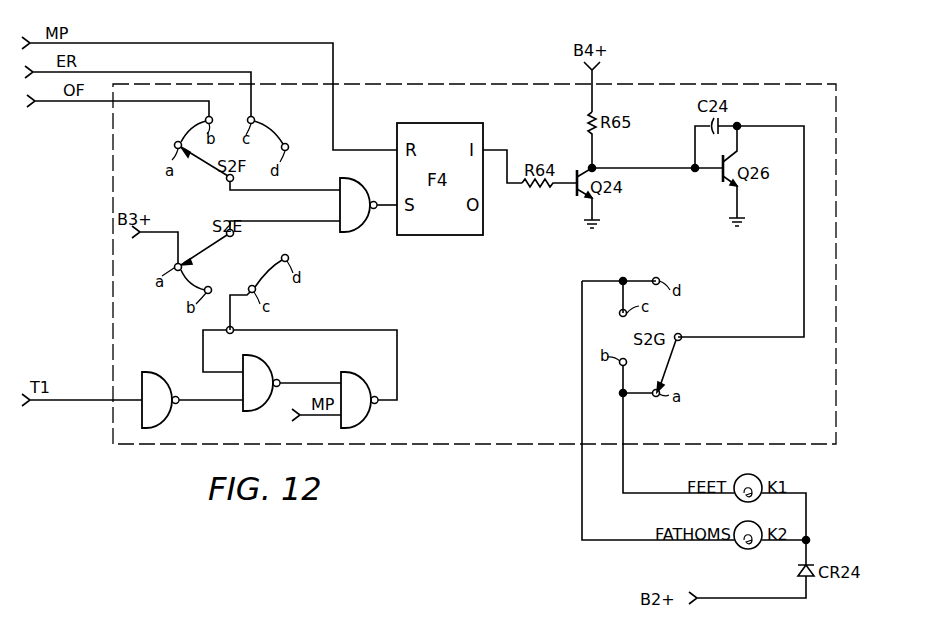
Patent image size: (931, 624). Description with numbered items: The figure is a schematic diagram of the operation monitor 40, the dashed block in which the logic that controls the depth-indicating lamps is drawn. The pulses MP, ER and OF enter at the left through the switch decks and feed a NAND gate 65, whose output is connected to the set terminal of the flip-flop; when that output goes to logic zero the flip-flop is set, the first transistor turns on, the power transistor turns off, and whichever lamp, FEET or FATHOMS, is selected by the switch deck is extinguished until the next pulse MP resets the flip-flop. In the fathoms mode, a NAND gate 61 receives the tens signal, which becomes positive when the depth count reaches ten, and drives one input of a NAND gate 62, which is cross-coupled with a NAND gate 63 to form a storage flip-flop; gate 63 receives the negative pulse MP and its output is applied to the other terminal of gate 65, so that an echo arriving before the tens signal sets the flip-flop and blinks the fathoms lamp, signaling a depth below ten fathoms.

The operation monitor 40 is at (492, 333).
The NAND gate 61 is at (162, 408).
The NAND gate 62 is at (265, 392).
The NAND gate 63 is at (363, 408).
The NAND gate 65 is at (362, 214).